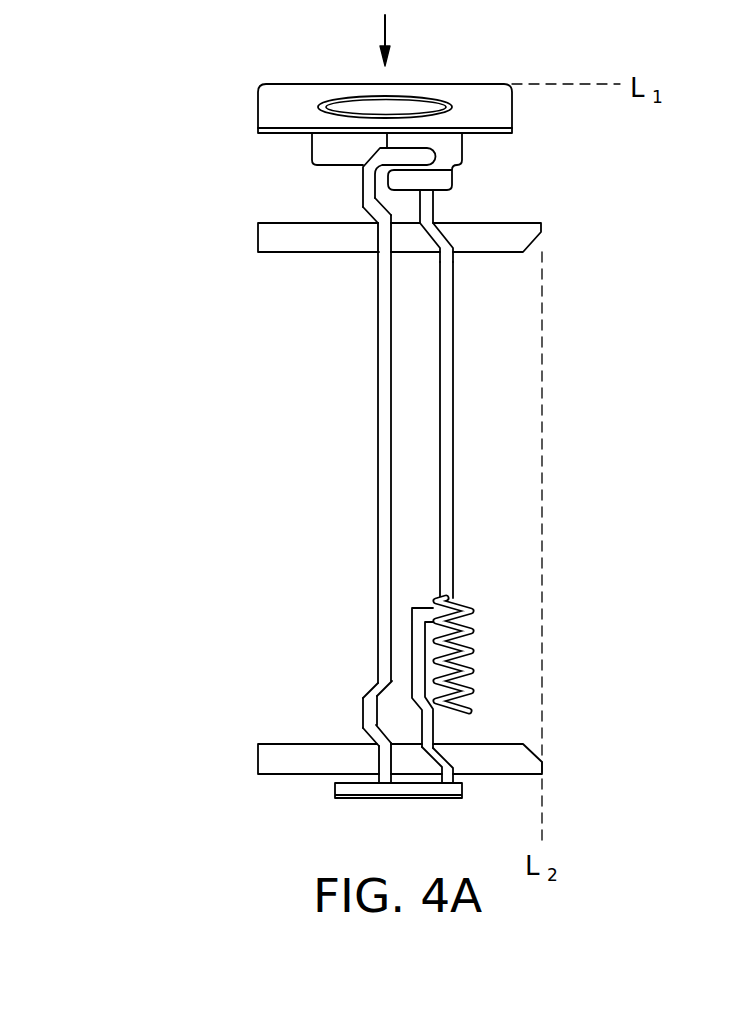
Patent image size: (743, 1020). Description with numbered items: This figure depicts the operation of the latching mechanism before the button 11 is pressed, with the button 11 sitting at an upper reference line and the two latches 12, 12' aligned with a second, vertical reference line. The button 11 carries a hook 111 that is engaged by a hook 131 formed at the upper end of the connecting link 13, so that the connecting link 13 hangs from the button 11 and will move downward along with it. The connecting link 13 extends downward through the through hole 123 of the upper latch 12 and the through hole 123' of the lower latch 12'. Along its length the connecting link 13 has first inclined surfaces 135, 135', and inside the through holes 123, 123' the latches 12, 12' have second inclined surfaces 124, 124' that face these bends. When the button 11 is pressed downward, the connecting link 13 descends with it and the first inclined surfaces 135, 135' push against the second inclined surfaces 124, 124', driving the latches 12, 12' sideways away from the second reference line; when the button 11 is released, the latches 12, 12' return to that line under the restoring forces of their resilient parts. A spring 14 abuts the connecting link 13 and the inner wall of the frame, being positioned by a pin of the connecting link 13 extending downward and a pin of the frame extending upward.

The button 11 is at (277, 105).
The hook 111 is at (388, 180).
The hook 131 is at (430, 155).
The connecting link 13 is at (405, 475).
The first inclined surface 135 is at (318, 257).
The first inclined surface 135' is at (319, 754).
The latch 12 is at (445, 239).
The latch 12' is at (448, 760).
The second inclined surface 124 is at (354, 286).
The second inclined surface 124' is at (356, 800).
The through hole 123 is at (500, 222).
The through hole 123' is at (479, 746).
The spring 14 is at (473, 631).